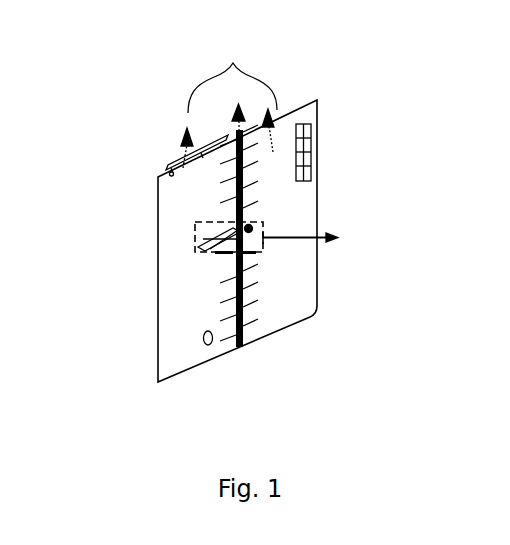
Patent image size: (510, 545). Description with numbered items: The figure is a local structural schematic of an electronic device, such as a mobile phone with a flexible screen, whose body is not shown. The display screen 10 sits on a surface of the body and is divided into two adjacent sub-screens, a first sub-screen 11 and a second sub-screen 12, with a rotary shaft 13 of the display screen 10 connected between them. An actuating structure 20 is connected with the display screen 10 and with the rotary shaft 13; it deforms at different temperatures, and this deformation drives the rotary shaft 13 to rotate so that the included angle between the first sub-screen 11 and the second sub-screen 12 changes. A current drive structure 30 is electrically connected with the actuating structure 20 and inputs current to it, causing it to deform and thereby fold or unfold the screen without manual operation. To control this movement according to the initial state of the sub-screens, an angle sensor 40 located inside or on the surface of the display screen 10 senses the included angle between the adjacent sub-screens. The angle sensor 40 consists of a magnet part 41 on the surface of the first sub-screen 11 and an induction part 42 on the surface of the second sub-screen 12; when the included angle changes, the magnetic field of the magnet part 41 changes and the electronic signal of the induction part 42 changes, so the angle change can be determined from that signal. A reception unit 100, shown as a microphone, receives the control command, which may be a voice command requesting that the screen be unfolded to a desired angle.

The display screen 10 is at (232, 76).
The first sub-screen 11 is at (272, 124).
The second sub-screen 12 is at (191, 135).
The rotary shaft 13 is at (240, 108).
The reception unit 100 is at (182, 174).
The actuating structure 20 is at (245, 190).
The current drive structure 30 is at (208, 345).
The angle sensor 40 is at (312, 239).
The magnet part 41 is at (198, 249).
The induction part 42 is at (266, 243).